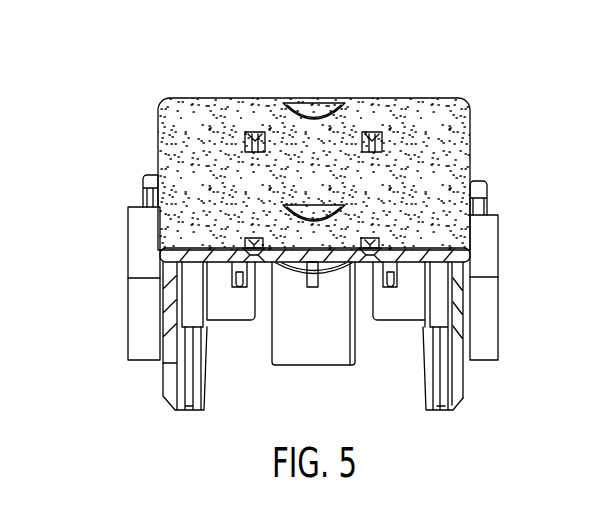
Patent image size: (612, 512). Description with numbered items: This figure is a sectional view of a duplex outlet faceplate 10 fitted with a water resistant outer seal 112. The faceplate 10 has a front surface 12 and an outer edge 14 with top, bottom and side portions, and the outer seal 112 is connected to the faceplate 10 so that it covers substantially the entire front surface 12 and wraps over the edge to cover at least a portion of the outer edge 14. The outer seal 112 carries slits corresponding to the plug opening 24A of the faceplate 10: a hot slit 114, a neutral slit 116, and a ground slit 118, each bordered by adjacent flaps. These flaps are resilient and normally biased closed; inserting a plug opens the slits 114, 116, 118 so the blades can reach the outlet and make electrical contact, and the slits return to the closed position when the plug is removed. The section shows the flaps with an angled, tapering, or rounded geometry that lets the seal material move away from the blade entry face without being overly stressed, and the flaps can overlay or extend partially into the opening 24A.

The duplex outlet faceplate 10 is at (117, 324).
The front surface 12 is at (446, 257).
The outer edge 14 is at (462, 327).
The plug opening 24A is at (368, 243).
The outer seal 112 is at (483, 143).
The hot slit 114 is at (258, 138).
The neutral slit 116 is at (375, 135).
The ground slit 118 is at (309, 113).